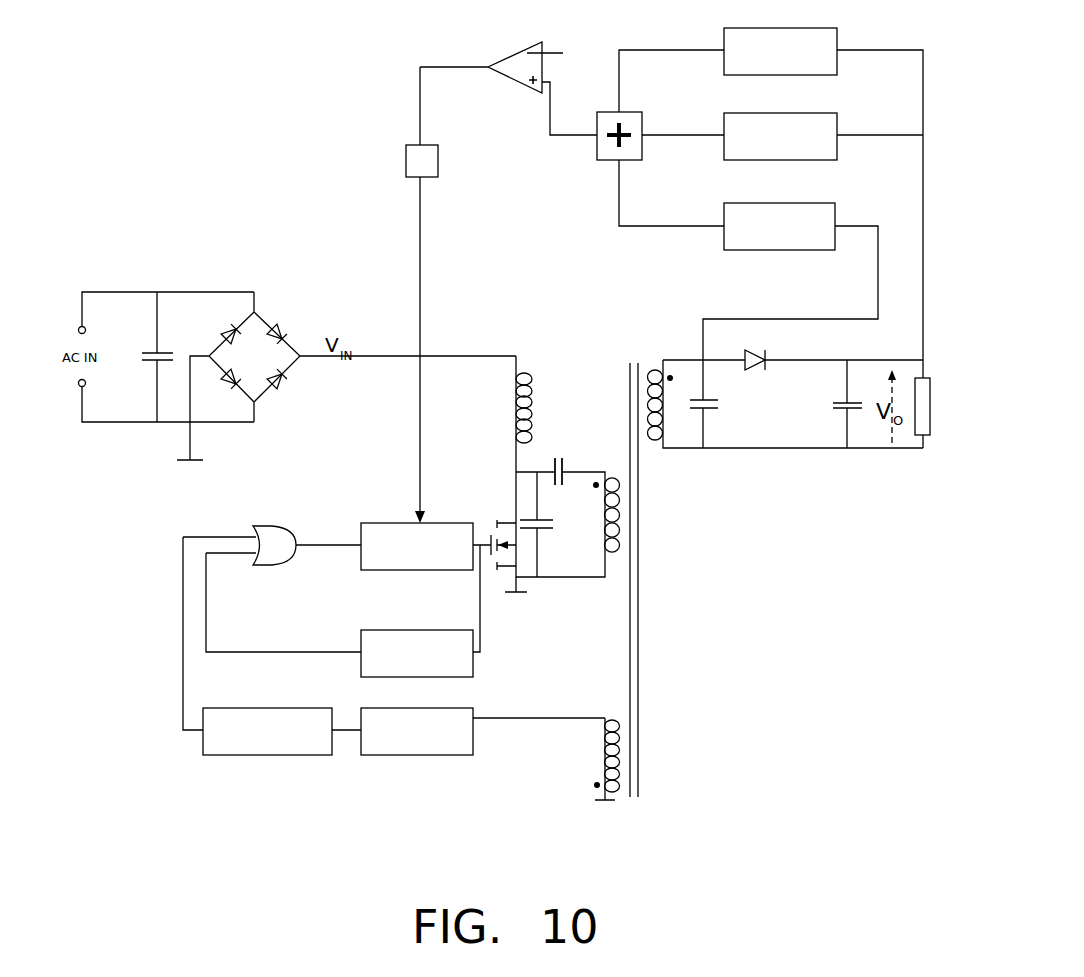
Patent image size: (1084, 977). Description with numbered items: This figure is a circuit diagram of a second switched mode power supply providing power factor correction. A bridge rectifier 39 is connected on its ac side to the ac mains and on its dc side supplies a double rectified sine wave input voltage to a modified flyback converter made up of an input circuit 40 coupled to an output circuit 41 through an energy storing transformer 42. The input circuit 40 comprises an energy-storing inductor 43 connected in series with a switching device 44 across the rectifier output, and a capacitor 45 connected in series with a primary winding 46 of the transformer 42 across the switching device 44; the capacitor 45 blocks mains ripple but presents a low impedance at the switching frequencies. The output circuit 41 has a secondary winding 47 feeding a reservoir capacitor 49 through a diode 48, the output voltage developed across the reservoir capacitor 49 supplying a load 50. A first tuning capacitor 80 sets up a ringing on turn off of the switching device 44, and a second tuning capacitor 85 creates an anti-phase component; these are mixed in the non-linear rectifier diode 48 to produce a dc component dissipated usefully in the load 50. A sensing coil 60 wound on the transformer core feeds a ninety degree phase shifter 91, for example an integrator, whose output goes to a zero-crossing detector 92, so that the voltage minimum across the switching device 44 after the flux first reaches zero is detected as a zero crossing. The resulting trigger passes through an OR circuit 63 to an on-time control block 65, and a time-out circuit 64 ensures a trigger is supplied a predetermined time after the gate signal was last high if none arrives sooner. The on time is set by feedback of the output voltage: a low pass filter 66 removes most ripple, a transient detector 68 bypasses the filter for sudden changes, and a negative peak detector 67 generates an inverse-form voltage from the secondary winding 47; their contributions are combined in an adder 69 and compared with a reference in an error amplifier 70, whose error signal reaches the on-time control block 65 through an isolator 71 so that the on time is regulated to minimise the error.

The bridge rectifier 39 is at (292, 300).
The input circuit 40 is at (482, 434).
The output circuit 41 is at (792, 419).
The energy storing transformer 42 is at (668, 593).
The energy-storing inductor 43 is at (533, 406).
The switching device 44 is at (490, 536).
The capacitor 45 is at (564, 460).
The primary winding 46 is at (622, 520).
The secondary winding 47 is at (653, 446).
The diode 48 is at (773, 346).
The reservoir capacitor 49 is at (845, 400).
The load 50 is at (932, 440).
The sensing coil 60 is at (620, 738).
The OR circuit 63 is at (280, 560).
The time-out circuit 64 is at (420, 628).
The on-time control block 65 is at (392, 571).
The low pass filter 66 is at (817, 161).
The negative peak detector 67 is at (817, 251).
The transient detector 68 is at (817, 76).
The adder 69 is at (597, 161).
The error amplifier 70 is at (522, 87).
The isolator 71 is at (438, 178).
The first tuning capacitor 80 is at (555, 529).
The second tuning capacitor 85 is at (712, 406).
The 90 degree phase shifter 91 is at (453, 757).
The zero-crossing detector 92 is at (308, 757).